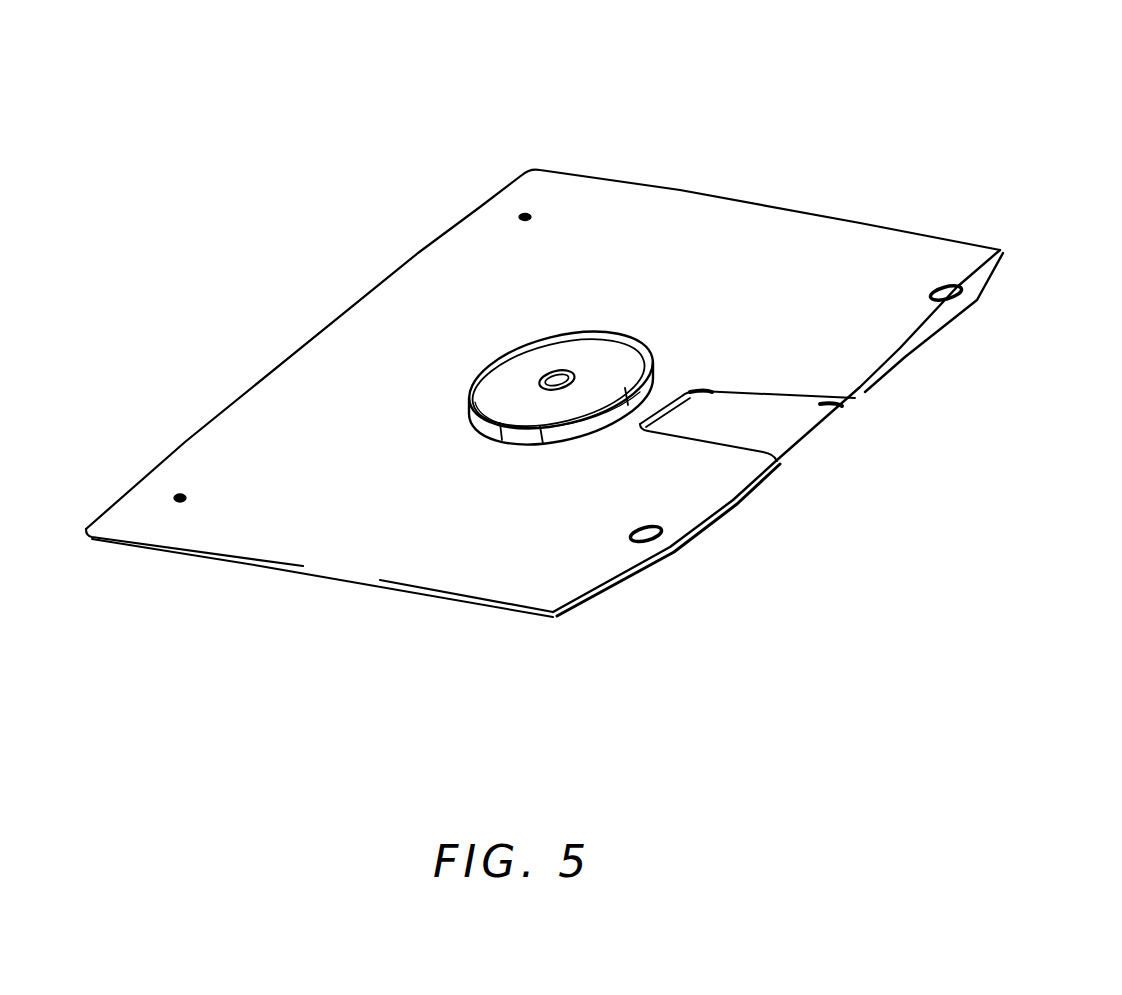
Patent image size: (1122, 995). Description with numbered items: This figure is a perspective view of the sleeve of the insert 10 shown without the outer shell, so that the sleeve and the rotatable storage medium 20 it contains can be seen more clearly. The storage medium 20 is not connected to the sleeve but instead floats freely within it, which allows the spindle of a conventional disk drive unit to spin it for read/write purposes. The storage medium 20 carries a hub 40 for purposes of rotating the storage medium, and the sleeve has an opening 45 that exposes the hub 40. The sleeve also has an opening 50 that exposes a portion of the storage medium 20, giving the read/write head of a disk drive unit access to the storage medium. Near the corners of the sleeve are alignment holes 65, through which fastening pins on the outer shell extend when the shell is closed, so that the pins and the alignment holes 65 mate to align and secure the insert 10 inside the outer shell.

The insert 10 is at (893, 86).
The rotatable storage medium 20 is at (802, 446).
The hub 40 is at (552, 435).
The opening 45 is at (507, 447).
The opening 50 is at (768, 413).
The alignment holes 65 is at (525, 217).